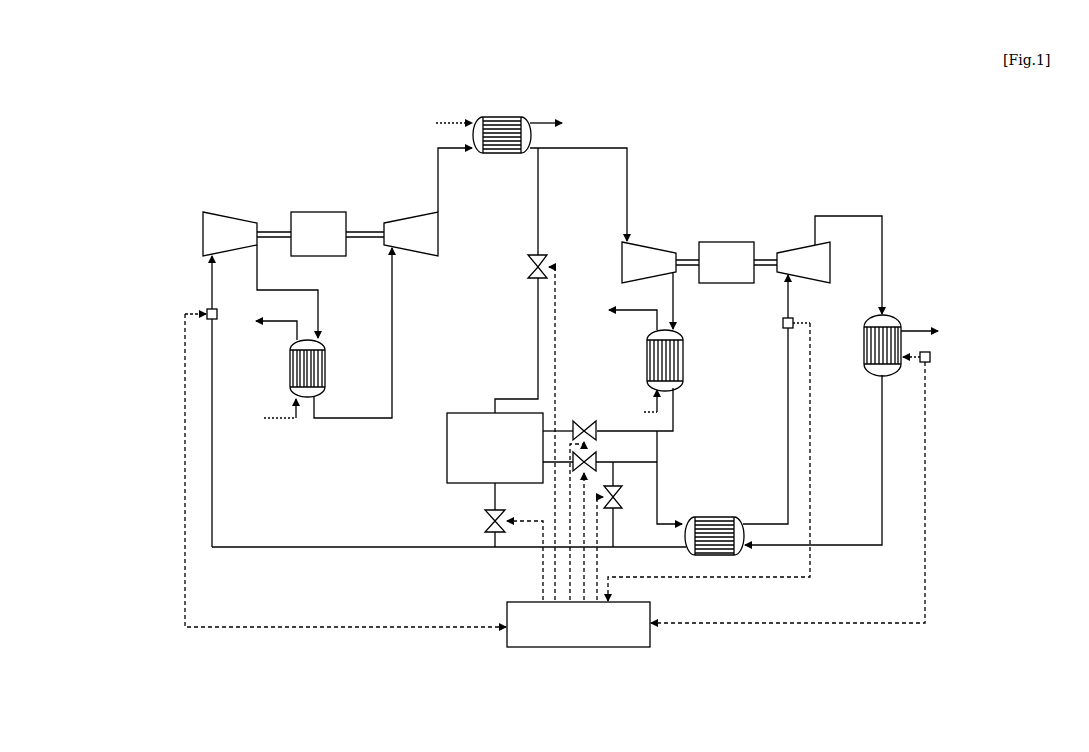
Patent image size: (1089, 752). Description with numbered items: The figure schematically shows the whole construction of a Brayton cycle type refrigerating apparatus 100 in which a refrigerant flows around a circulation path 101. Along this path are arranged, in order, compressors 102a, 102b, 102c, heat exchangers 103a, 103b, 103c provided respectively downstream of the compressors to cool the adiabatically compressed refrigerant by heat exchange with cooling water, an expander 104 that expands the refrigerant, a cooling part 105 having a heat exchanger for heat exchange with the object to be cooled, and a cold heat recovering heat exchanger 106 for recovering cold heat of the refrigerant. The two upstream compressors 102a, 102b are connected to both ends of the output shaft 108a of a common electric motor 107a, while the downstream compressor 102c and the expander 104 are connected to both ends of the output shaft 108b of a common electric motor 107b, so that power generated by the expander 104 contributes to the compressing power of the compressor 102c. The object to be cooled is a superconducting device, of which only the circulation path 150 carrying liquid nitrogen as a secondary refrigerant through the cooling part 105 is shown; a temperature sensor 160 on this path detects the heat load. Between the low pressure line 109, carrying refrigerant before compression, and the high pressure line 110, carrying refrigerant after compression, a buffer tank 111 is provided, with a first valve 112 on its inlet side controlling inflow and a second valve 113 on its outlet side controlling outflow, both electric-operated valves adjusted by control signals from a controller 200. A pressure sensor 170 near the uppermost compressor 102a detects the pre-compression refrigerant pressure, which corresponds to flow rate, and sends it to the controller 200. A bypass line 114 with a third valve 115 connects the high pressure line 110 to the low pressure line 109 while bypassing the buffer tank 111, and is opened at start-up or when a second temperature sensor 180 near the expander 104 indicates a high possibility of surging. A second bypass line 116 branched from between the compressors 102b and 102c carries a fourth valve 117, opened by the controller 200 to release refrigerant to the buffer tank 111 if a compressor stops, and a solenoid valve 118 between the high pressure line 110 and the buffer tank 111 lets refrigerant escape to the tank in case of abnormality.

The Brayton cycle type refrigerating apparatus 100 is at (763, 137).
The circulation path 101 is at (213, 463).
The compressor 102a is at (232, 212).
The compressor 102b is at (413, 216).
The compressor 102c is at (652, 243).
The heat exchanger 103a is at (326, 368).
The heat exchanger 103b is at (500, 154).
The heat exchanger 103c is at (684, 364).
The expander 104 is at (802, 248).
The cooling part 105 is at (864, 350).
The cold heat recovering heat exchanger 106 is at (722, 517).
The electric motor 107a is at (322, 212).
The electric motor 107b is at (728, 242).
The output shaft 108a is at (361, 238).
The output shaft 108b is at (762, 266).
The low pressure line 109 is at (430, 548).
The high pressure line 110 is at (658, 444).
The buffer tank 111 is at (458, 413).
The first valve 112 is at (595, 459).
The second valve 113 is at (485, 524).
The bypass line 114 is at (614, 530).
The third valve 115 is at (618, 490).
The second bypass line 116 is at (539, 220).
The fourth valve 117 is at (528, 267).
The solenoid valve 118 is at (582, 421).
The circulation path 150 is at (919, 318).
The temperature sensor 160 is at (930, 360).
The pressure sensor 170 is at (218, 313).
The second temperature sensor 180 is at (783, 323).
The controller 200 is at (512, 602).